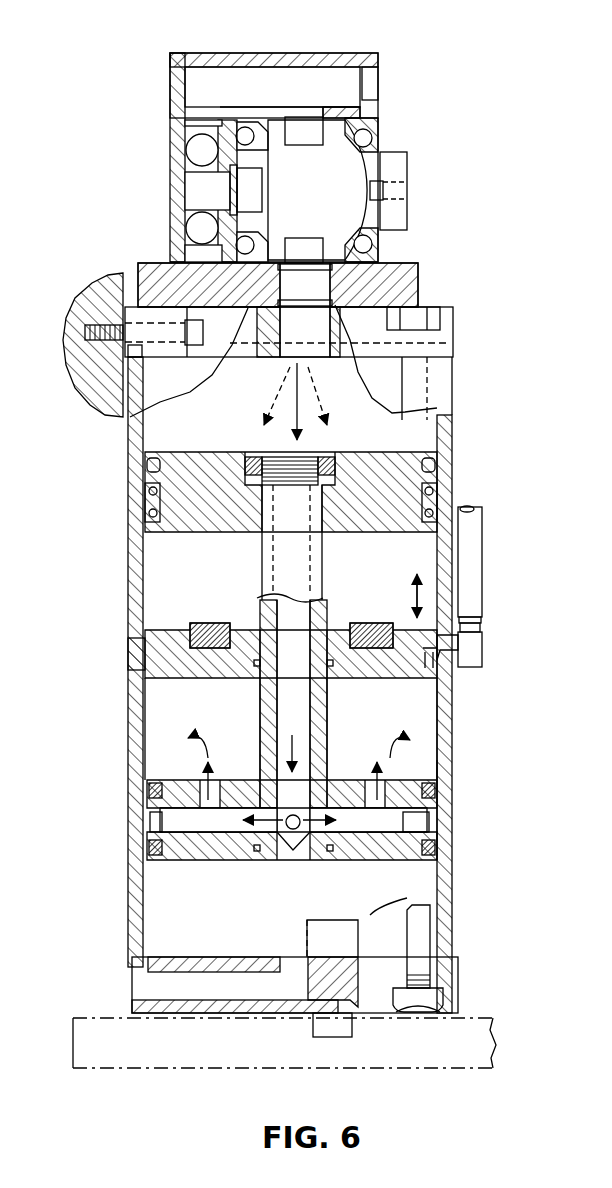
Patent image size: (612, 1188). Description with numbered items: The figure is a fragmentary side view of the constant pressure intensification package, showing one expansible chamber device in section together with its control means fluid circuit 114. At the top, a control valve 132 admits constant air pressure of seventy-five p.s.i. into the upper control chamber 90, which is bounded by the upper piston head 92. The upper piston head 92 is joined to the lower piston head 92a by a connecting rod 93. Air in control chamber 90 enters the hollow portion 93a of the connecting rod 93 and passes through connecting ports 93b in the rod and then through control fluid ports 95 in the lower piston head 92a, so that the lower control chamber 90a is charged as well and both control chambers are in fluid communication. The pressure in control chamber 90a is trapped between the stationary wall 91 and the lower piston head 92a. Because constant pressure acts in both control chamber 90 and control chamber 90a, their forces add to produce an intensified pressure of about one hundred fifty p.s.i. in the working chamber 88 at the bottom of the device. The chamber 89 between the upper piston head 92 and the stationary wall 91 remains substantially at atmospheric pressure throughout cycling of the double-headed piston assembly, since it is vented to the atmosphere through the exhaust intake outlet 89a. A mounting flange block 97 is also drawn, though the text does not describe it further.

The control means fluid circuit 114 is at (311, 48).
The control valve 132 is at (337, 183).
The mounting flange block 97 is at (367, 327).
The control chamber 90 is at (372, 422).
The upper piston head 92 is at (407, 480).
The connecting rod 93 is at (324, 562).
The hollow portion 93a is at (278, 503).
The connecting ports 93b is at (285, 838).
The stationary wall 91 is at (175, 645).
The chamber 89 is at (410, 557).
The exhaust intake outlet 89a is at (437, 670).
The control fluid ports 95 is at (217, 777).
The control chamber 90a is at (430, 765).
The lower piston head 92a is at (410, 860).
The working chamber 88 is at (430, 898).